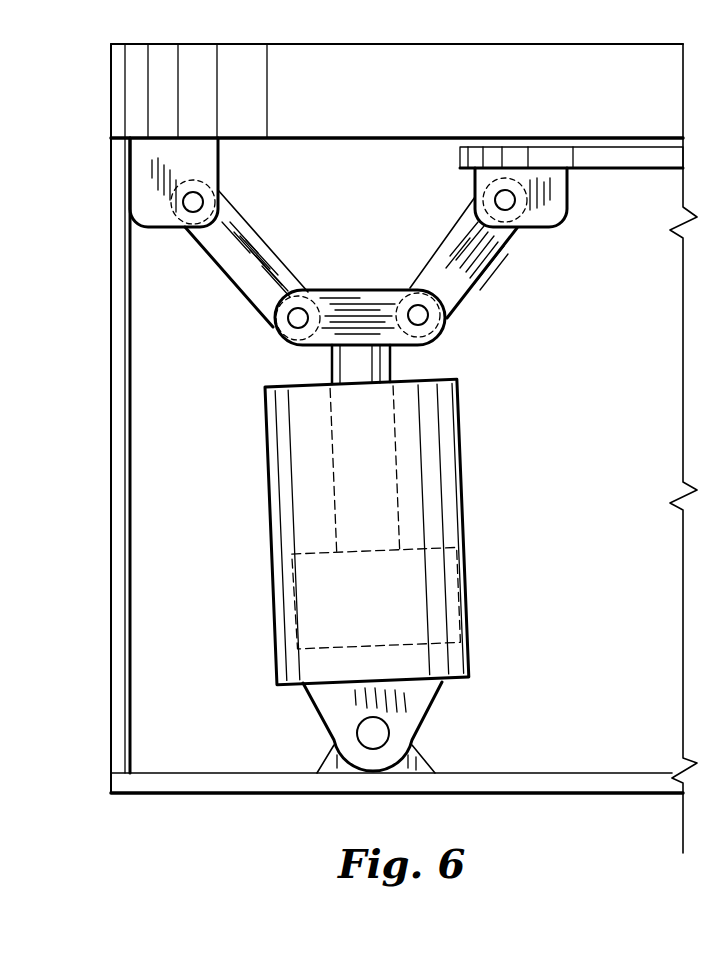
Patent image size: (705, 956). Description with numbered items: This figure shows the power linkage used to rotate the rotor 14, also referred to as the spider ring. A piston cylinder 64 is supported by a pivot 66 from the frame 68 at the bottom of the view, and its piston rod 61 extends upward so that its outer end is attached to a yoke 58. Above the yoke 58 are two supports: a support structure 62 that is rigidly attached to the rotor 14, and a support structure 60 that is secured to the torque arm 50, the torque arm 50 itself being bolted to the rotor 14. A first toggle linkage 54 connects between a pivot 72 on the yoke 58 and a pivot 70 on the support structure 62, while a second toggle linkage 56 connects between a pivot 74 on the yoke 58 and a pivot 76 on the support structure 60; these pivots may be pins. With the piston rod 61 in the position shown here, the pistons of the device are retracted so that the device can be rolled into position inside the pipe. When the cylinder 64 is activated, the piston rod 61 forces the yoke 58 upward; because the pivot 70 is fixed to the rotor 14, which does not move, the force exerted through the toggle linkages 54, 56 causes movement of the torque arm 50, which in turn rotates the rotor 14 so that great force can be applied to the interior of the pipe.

The rotor 14 is at (157, 82).
The torque arm 50 is at (472, 158).
The first toggle linkage 54 is at (255, 277).
The second toggle linkage 56 is at (477, 260).
The yoke 58 is at (360, 308).
The support structure 60 is at (560, 217).
The piston rod 61 is at (337, 360).
The support structure 62 is at (160, 180).
The piston cylinder 64 is at (273, 545).
The pivot 66 is at (372, 733).
The frame 68 is at (570, 778).
The pivot 70 is at (193, 202).
The pivot 72 is at (297, 318).
The pivot 74 is at (420, 315).
The pivot 76 is at (505, 197).